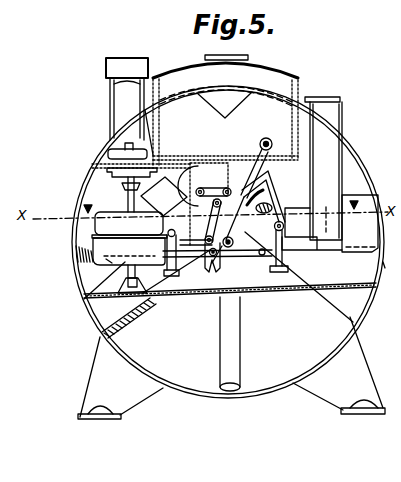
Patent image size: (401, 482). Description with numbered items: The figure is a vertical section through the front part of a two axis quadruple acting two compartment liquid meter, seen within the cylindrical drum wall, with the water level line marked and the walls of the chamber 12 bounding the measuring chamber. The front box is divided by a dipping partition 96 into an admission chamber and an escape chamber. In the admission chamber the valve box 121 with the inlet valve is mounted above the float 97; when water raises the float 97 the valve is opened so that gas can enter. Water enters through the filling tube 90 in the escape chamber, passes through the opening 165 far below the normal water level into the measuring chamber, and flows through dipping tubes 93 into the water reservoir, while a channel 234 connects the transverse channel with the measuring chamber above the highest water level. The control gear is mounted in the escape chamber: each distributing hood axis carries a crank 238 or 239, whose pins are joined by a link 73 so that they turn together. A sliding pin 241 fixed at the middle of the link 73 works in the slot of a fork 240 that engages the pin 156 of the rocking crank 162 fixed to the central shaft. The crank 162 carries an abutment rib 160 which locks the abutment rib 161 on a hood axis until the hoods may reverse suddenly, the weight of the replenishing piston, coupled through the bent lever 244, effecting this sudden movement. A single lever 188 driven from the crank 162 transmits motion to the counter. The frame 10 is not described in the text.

The chamber 12 is at (323, 302).
The valve box 121 is at (157, 140).
The float 97 is at (129, 235).
The dipping partition 96 is at (188, 192).
The bent lever 244 is at (213, 183).
The lever 188 is at (252, 178).
The crank 162 is at (244, 222).
The pin 156 is at (214, 208).
The abutment rib 160 is at (265, 181).
The abutment rib 161 is at (279, 201).
The crank 239 is at (283, 257).
The link 73 is at (240, 258).
The fork 240 is at (207, 263).
The sliding pin 241 is at (228, 262).
The crank 238 is at (165, 259).
The opening 165 is at (80, 263).
The dipping tubes 93 is at (241, 316).
The filling tube 90 is at (341, 113).
The channel 234 is at (330, 223).
The frame 10 is at (384, 268).